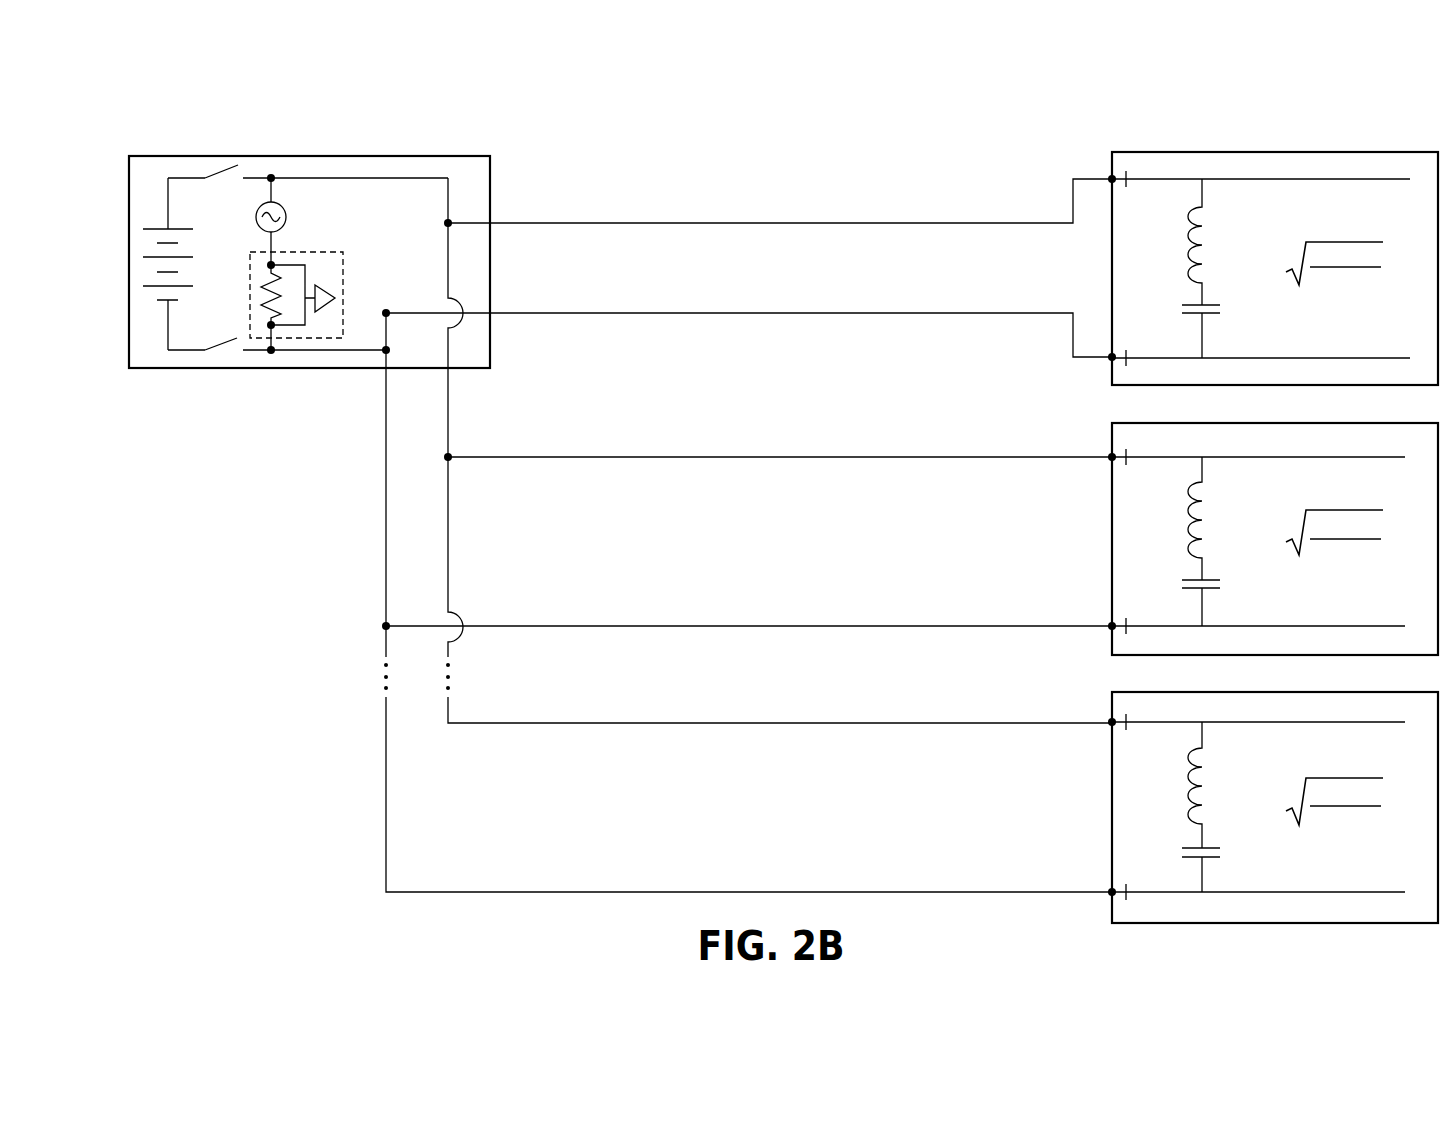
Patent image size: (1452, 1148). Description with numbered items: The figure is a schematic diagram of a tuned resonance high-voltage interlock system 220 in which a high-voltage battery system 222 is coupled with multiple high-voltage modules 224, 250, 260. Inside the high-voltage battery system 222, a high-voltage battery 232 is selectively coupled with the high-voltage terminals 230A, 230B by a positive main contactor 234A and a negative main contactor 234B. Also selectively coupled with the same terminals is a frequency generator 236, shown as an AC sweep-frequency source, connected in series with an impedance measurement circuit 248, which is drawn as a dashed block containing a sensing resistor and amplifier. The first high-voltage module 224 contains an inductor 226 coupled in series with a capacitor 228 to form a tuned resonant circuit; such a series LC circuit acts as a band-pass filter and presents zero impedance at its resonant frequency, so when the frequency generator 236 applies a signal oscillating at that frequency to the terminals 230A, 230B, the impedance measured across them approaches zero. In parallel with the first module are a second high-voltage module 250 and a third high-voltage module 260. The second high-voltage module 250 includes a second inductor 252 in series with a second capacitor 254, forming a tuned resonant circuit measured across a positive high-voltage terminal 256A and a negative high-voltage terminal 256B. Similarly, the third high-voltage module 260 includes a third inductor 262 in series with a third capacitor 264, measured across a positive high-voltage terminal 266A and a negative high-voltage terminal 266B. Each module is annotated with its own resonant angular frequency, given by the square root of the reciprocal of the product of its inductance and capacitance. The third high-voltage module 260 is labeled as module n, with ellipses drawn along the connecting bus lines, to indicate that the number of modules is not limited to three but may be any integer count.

The tuned resonance high-voltage interlock system 220 is at (913, 88).
The high-voltage battery system 222 is at (393, 157).
The high-voltage module 224 is at (1170, 151).
The inductor (L1) 226 is at (1182, 237).
The capacitor (C1) 228 is at (1218, 316).
The high-voltage terminal 230A is at (1112, 179).
The high-voltage terminal 230B is at (1112, 357).
The high-voltage battery 232 is at (147, 229).
The positive main contactor 234A is at (220, 170).
The negative main contactor 234B is at (226, 340).
The frequency generator 236 is at (280, 206).
The impedance measurement circuit 248 is at (347, 305).
The second high-voltage module 250 is at (1112, 430).
The second inductor (L2) 252 is at (1182, 512).
The second capacitor (C2) 254 is at (1218, 590).
The positive high-voltage terminal 256A is at (1112, 457).
The negative high-voltage terminal 256B is at (1112, 626).
The third high-voltage module 260 is at (1112, 700).
The third inductor (L3) 262 is at (1182, 777).
The third capacitor (C3) 264 is at (1218, 859).
The positive high-voltage terminal 266A is at (1112, 722).
The negative high-voltage terminal 266B is at (1112, 892).